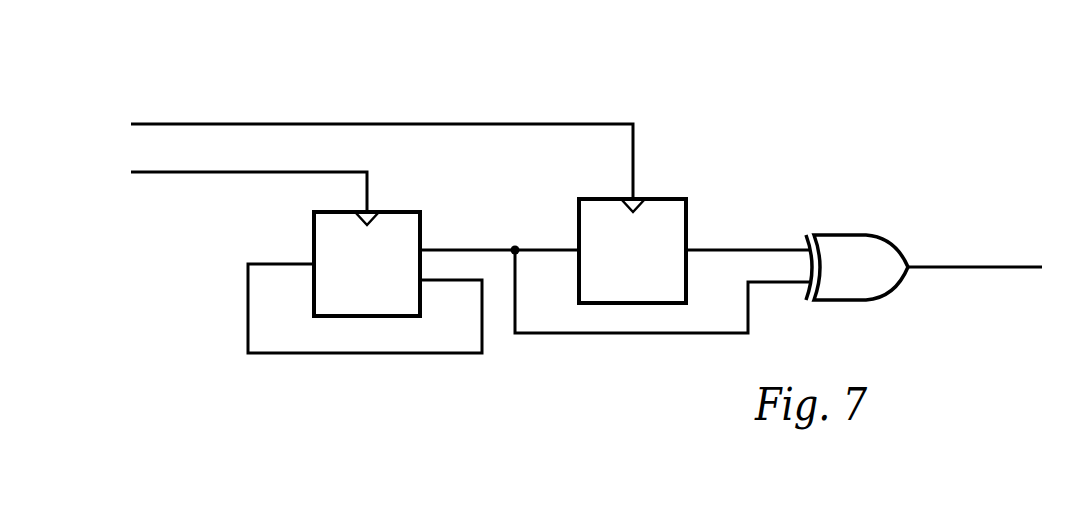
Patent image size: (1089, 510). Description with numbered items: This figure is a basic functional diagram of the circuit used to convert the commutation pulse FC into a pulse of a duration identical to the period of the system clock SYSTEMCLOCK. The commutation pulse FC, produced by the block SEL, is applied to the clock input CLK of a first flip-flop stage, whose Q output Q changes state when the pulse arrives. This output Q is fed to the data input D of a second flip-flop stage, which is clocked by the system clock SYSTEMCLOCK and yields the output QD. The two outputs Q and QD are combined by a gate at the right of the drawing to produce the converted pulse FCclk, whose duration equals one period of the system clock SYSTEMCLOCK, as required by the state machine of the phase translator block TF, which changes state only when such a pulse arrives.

The system clock SYSTEMCLOCK is at (382, 133).
The commutation pulse FC is at (249, 174).
The clock input CLK is at (365, 282).
The Q output Q is at (616, 278).
The D input D is at (632, 251).
The QD output QD is at (748, 236).
The converted commutation pulse FCclk is at (924, 267).